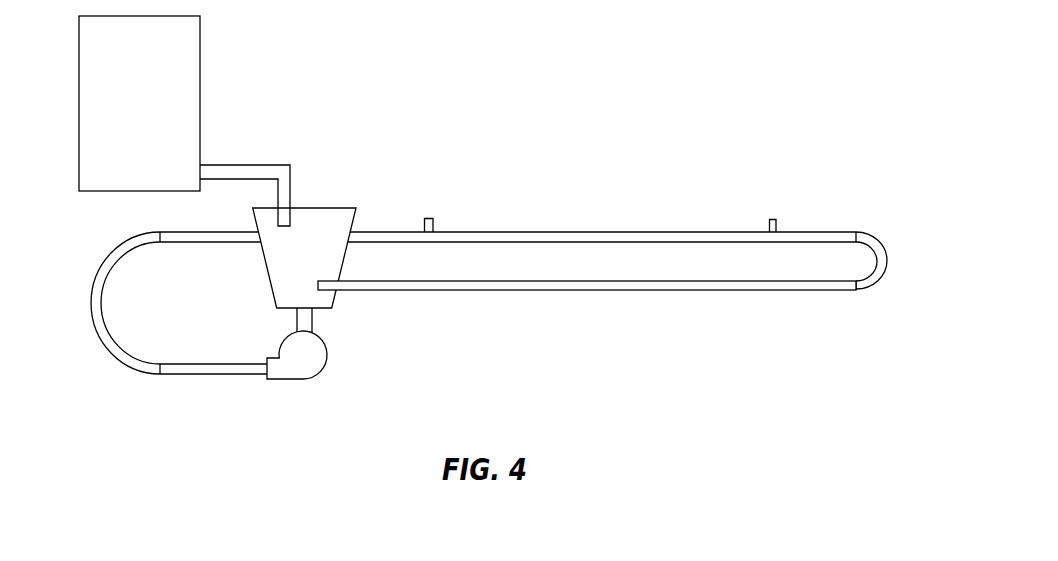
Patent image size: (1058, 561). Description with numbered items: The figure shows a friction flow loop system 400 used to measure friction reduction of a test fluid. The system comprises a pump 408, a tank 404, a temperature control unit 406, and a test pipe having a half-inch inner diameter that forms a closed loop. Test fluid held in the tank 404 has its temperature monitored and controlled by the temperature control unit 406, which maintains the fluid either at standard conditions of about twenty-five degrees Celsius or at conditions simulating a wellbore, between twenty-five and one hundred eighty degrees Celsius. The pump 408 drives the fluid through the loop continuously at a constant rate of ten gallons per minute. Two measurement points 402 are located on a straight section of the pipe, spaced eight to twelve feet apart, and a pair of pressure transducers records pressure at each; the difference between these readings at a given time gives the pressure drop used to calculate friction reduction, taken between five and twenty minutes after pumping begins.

The friction flow loop system 400 is at (828, 55).
The measurement points 402 is at (448, 207).
The tank 404 is at (325, 183).
The temperature control unit 406 is at (160, 115).
The pump 408 is at (338, 371).